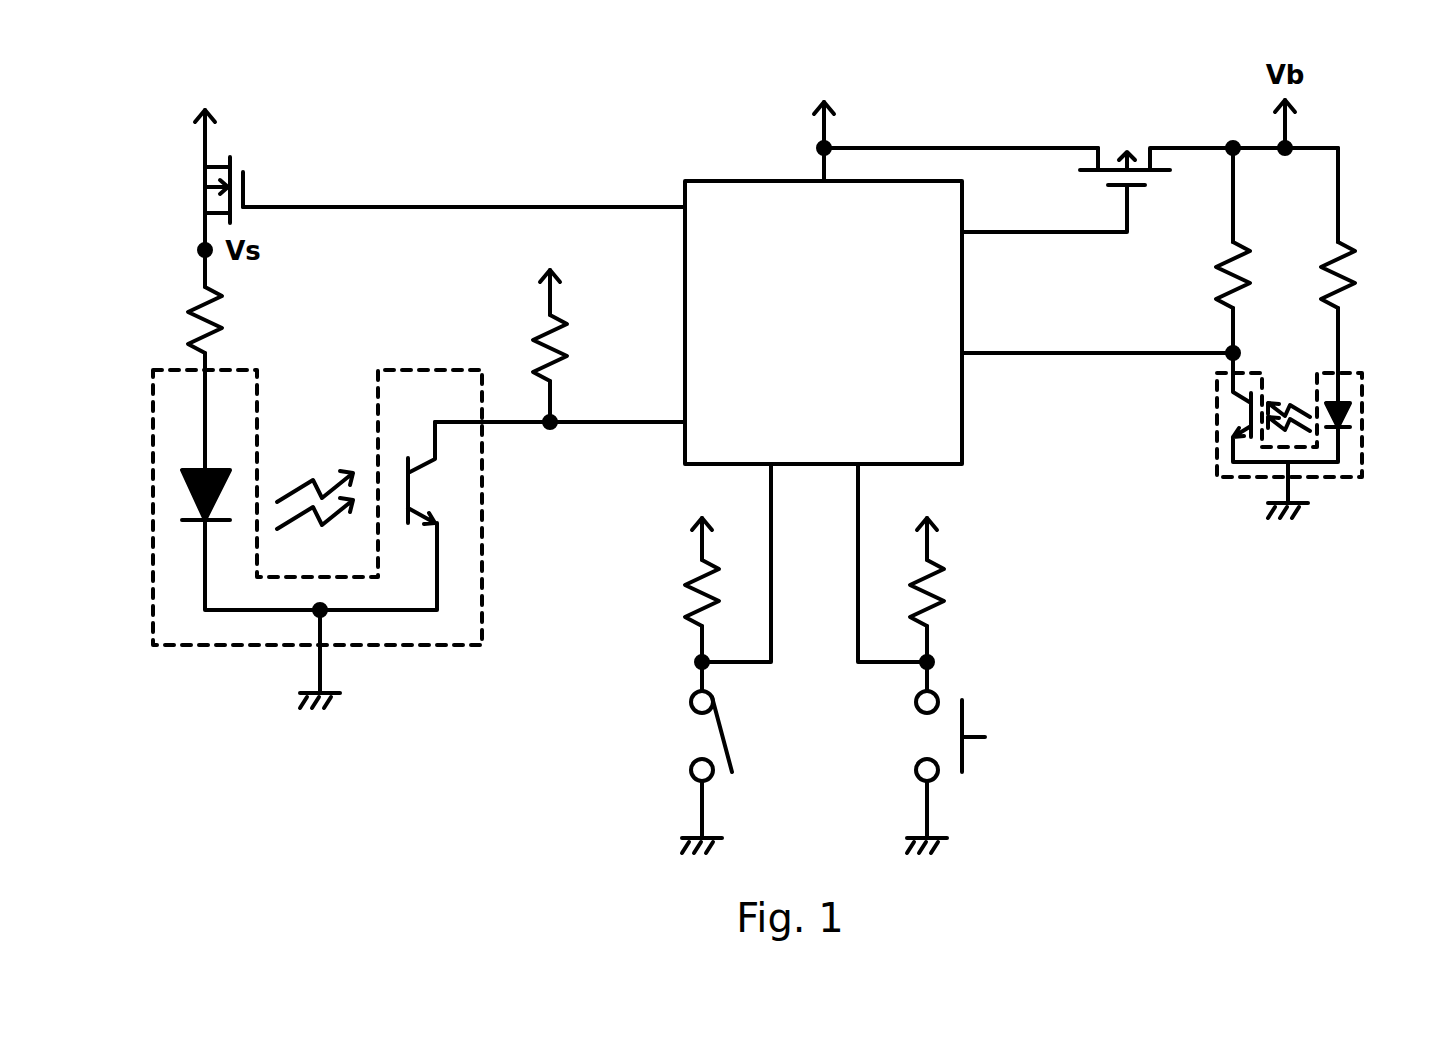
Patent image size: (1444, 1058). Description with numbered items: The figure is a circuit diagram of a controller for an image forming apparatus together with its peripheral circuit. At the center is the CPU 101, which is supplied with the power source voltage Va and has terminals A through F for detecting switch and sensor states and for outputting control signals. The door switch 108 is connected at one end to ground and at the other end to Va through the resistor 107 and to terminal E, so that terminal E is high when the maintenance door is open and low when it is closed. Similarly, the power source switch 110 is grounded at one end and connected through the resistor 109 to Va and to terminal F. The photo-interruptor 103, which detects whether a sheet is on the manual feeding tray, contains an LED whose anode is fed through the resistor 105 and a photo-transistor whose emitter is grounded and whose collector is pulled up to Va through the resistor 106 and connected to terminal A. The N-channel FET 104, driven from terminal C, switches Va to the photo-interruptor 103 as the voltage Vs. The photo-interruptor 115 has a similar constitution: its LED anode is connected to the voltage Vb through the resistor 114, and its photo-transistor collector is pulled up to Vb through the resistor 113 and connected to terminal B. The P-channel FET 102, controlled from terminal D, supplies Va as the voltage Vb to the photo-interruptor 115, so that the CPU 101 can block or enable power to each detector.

The CPU 101 is at (724, 181).
The FET 102 is at (1098, 138).
The photo-interruptor 103 is at (150, 445).
The FET 104 is at (188, 195).
The resistor 105 is at (175, 318).
The resistor 106 is at (520, 346).
The resistor 107 is at (672, 593).
The door switch 108 is at (672, 745).
The resistor 109 is at (960, 593).
The power source switch 110 is at (893, 745).
The resistor 113 is at (1215, 275).
The resistor 114 is at (1320, 275).
The photo-interruptor 115 is at (1372, 432).